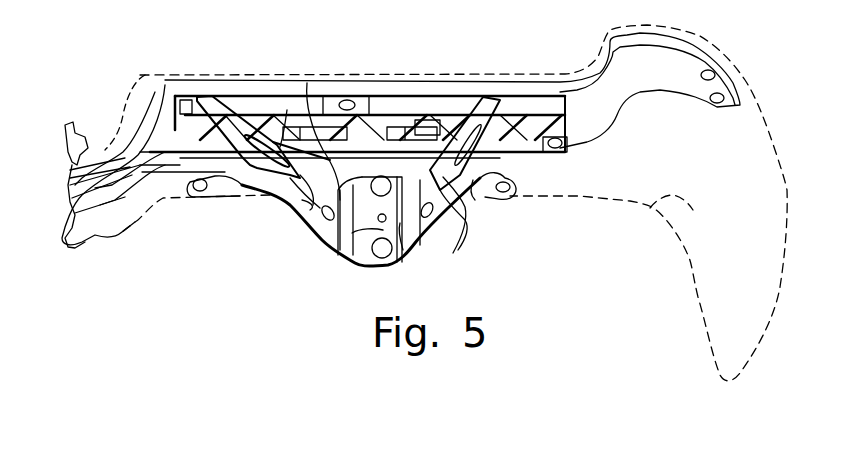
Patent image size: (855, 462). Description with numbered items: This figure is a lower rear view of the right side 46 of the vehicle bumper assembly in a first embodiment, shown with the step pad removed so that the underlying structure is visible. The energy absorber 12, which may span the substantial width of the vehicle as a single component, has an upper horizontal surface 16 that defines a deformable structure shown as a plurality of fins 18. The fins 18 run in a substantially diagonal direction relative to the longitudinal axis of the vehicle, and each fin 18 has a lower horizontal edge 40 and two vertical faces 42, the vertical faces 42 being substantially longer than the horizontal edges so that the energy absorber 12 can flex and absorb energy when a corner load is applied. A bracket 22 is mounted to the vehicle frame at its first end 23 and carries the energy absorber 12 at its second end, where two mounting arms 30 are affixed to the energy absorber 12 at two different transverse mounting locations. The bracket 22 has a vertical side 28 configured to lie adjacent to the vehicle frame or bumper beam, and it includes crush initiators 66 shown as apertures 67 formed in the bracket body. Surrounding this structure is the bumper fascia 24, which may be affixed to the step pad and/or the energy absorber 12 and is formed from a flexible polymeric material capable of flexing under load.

The energy absorber 12 is at (600, 102).
The upper horizontal surface 16 is at (163, 88).
The fins 18 is at (273, 123).
The bracket 22 is at (351, 237).
The first end of the bracket 23 is at (361, 238).
The bumper fascia 24 is at (655, 207).
The vertical side 28 is at (347, 250).
The mounting arms 30 is at (220, 118).
The lower horizontal edge 40 is at (403, 250).
The vertical faces 42 is at (427, 133).
The right side of the vehicle 46 is at (520, 227).
The crush initiators 66 is at (381, 151).
The apertures 67 is at (287, 110).